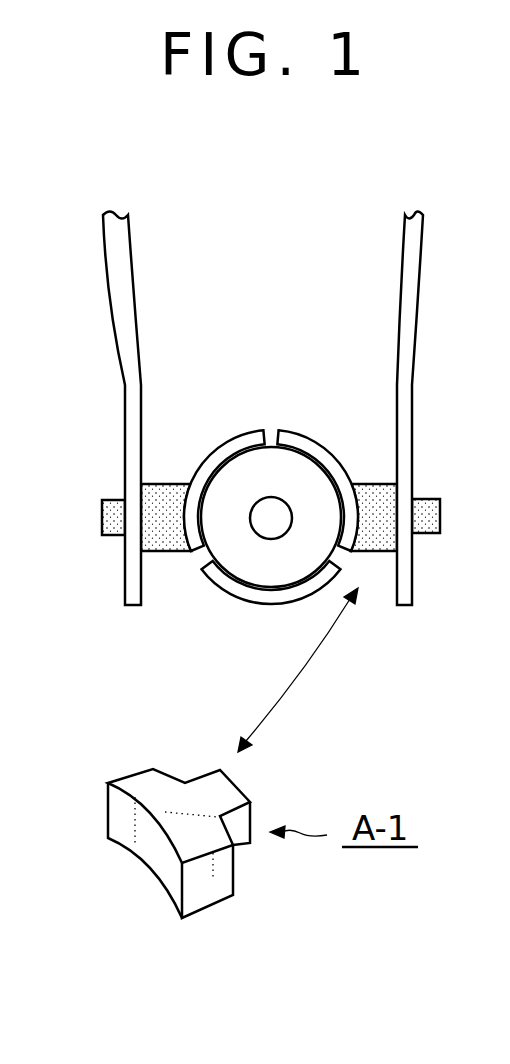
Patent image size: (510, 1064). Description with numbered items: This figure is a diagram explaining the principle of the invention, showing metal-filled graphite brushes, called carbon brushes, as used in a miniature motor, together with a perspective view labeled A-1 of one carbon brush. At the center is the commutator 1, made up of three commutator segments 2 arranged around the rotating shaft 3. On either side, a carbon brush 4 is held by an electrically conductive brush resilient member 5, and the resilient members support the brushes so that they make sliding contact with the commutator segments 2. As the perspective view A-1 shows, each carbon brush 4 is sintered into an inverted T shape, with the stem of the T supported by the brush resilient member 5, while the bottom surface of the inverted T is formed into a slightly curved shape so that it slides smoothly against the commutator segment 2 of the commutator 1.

The commutator 1 is at (328, 392).
The commutator segment 2 is at (208, 460).
The rotating shaft 3 is at (258, 533).
The carbon brush 4 is at (370, 485).
The brush resilient member 5 is at (124, 422).